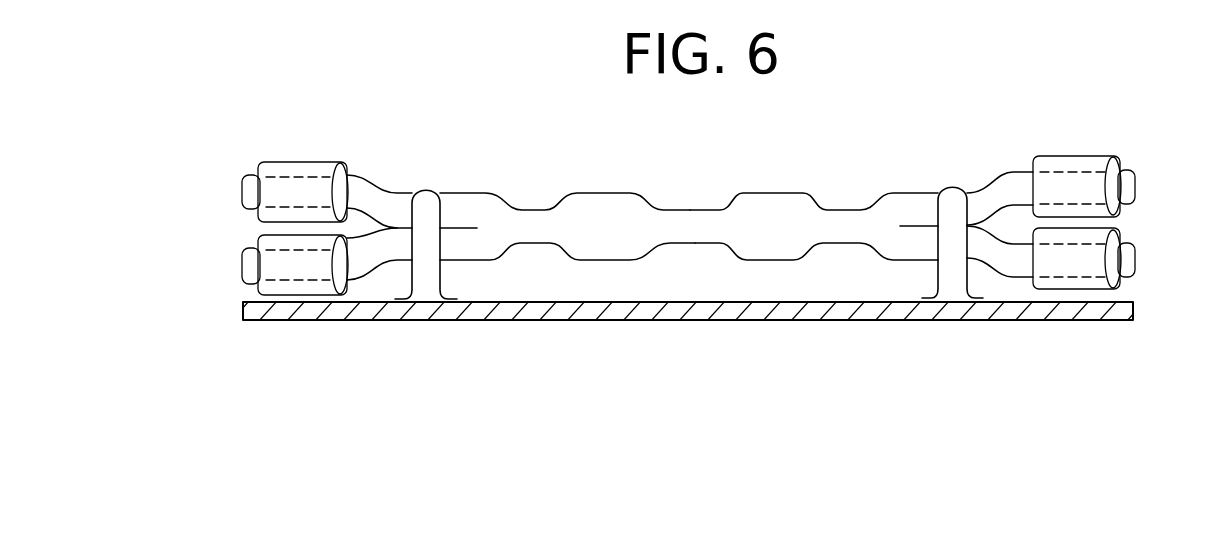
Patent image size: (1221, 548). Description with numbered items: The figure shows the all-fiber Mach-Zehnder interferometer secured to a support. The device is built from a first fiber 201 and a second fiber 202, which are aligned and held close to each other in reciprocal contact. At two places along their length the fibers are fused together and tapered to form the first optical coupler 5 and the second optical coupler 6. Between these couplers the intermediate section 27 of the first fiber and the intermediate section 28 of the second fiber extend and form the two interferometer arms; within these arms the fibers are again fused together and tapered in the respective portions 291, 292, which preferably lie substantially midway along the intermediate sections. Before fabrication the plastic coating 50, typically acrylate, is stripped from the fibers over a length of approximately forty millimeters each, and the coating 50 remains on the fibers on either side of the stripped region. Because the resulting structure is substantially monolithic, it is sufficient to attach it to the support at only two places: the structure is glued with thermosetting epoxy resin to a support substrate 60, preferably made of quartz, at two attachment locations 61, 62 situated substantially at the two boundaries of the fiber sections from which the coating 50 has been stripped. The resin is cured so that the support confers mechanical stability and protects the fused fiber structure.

The first optical coupler 5 is at (532, 177).
The second optical coupler 6 is at (827, 193).
The intermediate section of the first fiber 27 is at (593, 193).
The intermediate section of the second fiber 28 is at (778, 260).
The coating 50 is at (305, 162).
The support substrate 60 is at (425, 313).
The attachment location 61 is at (426, 186).
The attachment location 62 is at (952, 183).
The first fiber 201 is at (485, 193).
The second fiber 202 is at (1004, 228).
The fused and tapered portion of the first intermediate section 291 is at (670, 210).
The fused and tapered portion of the second intermediate section 292 is at (677, 245).